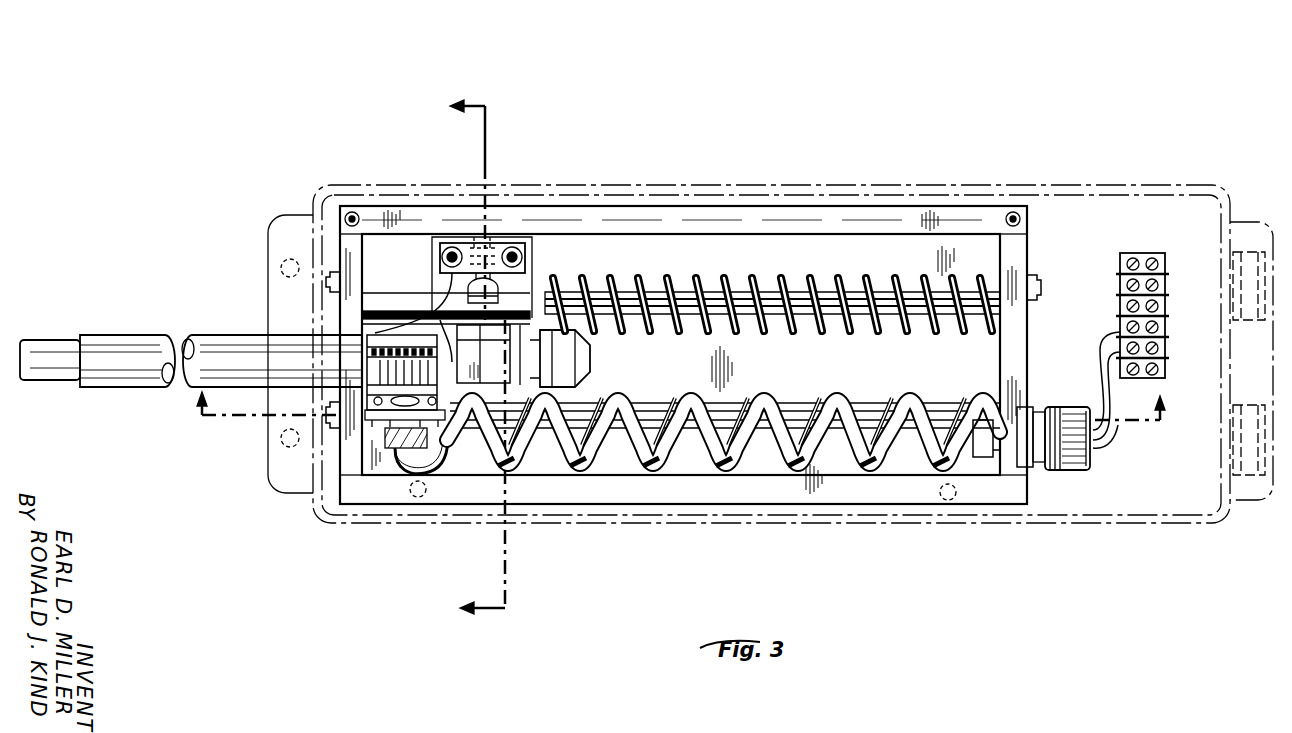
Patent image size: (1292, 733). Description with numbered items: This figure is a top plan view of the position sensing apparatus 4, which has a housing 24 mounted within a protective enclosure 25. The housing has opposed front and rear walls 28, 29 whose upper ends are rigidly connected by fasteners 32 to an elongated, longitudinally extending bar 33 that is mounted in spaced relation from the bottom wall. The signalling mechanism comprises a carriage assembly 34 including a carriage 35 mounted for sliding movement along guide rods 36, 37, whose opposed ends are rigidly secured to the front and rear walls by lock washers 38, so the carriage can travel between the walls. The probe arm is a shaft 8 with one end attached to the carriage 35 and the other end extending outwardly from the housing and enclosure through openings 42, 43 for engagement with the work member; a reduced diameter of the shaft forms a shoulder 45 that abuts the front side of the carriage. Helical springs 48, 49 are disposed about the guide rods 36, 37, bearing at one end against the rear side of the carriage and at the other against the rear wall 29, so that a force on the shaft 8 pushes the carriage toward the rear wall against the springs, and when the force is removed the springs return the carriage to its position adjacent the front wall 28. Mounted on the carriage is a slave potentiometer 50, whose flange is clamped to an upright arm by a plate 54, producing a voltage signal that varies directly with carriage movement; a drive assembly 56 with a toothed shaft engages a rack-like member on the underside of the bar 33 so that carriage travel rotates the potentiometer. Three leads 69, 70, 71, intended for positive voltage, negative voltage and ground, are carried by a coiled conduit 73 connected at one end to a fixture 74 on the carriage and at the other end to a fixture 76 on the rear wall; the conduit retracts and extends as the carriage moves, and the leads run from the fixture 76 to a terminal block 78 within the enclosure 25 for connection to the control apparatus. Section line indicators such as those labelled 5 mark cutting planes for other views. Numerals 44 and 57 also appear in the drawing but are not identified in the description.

The position sensing apparatus 4 is at (302, 98).
The section line 5- 5 is at (470, 358).
The probe arm shaft 8 is at (148, 338).
The housing 24 is at (780, 206).
The protective enclosure 25 is at (1118, 192).
The front wall 28 is at (345, 248).
The rear wall 29 is at (1020, 252).
The fasteners 32 is at (350, 214).
The elongated bar 33 is at (856, 220).
The carriage assembly 34 is at (378, 490).
The carriage 35 is at (393, 470).
The guide rod 36 is at (608, 292).
The guide rod 37 is at (826, 382).
The lock washers 38 is at (330, 285).
The opening 42 is at (240, 338).
The opening 43 is at (330, 350).
The motor mounting block 44 is at (406, 438).
The shoulder 45 is at (362, 320).
The helical spring 48 is at (704, 288).
The helical spring 49 is at (704, 462).
The slave potentiometer 50 is at (583, 372).
The plate 54 is at (515, 312).
The drive assembly 56 is at (450, 242).
The hex nut 57 is at (578, 334).
The lead 69 is at (376, 310).
The lead 70 is at (476, 302).
The lead 71 is at (1136, 458).
The conduit 73 is at (577, 474).
The fixture 74 is at (476, 462).
The fixture 76 is at (1058, 476).
The terminal block 78 is at (1166, 264).